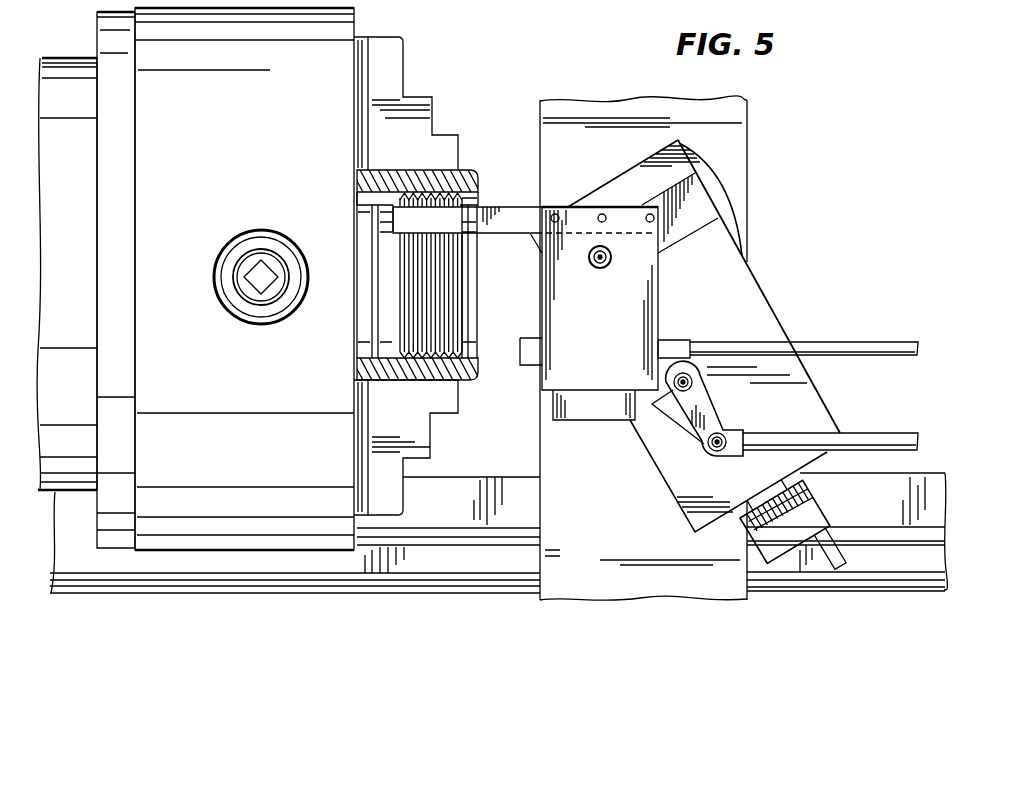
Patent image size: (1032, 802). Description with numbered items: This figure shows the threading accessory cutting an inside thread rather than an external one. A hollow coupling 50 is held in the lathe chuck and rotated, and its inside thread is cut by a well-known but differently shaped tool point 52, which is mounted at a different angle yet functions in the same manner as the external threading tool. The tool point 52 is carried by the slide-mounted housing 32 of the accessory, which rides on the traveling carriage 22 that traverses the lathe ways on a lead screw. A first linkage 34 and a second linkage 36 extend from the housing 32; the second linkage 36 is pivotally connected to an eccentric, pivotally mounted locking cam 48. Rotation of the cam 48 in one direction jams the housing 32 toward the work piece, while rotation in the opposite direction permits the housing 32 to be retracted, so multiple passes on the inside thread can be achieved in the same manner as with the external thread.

The traveling carriage 22 is at (748, 166).
The slide-mounted housing 32 is at (617, 333).
The first linkage 34 is at (866, 341).
The second linkage 36 is at (880, 433).
The locking cam 48 is at (719, 413).
The hollow coupling 50 is at (472, 170).
The tool point 52 is at (507, 224).